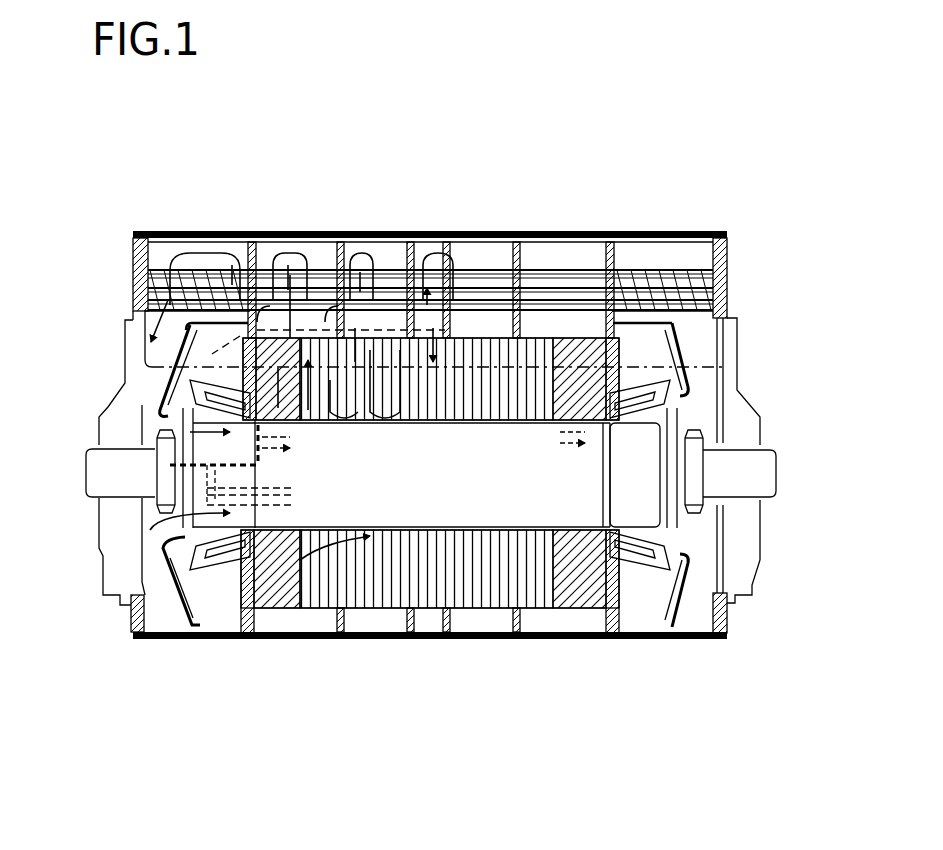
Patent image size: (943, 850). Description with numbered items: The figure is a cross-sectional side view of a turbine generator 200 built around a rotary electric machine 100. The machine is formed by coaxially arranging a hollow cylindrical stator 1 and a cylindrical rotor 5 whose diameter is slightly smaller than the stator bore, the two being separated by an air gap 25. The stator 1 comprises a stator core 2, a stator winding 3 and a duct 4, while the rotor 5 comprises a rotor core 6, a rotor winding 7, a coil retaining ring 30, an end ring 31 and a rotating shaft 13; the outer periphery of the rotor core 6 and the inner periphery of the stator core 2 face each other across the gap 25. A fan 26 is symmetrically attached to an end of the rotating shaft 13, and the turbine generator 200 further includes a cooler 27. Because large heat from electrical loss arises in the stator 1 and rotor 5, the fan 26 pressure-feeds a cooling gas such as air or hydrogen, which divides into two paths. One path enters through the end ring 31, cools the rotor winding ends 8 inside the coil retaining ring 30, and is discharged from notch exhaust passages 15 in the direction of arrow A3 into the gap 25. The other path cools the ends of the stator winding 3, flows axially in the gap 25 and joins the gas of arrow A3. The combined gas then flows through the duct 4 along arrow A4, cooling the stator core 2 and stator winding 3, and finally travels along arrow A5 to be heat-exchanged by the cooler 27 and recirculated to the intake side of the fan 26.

The stator 1 is at (633, 760).
The stator core 2 is at (566, 560).
The stator winding 3 is at (648, 565).
The duct 4 is at (545, 560).
The rotor 5 is at (105, 760).
The rotor core 6 is at (266, 456).
The rotor winding 7 is at (278, 510).
The rotor winding ends 8 is at (257, 510).
The rotating shaft 13 is at (118, 490).
The notch exhaust passages 15 is at (286, 456).
The gap 25 is at (478, 560).
The fan 26 is at (142, 432).
The cooler 27 is at (136, 272).
The coil retaining ring 30 is at (232, 515).
The end ring 31 is at (205, 570).
The rotary electric machine 100 is at (638, 462).
The turbine generator 200 is at (380, 212).
The arrow A3 is at (386, 642).
The arrow A4 is at (430, 366).
The arrow A5 is at (293, 233).